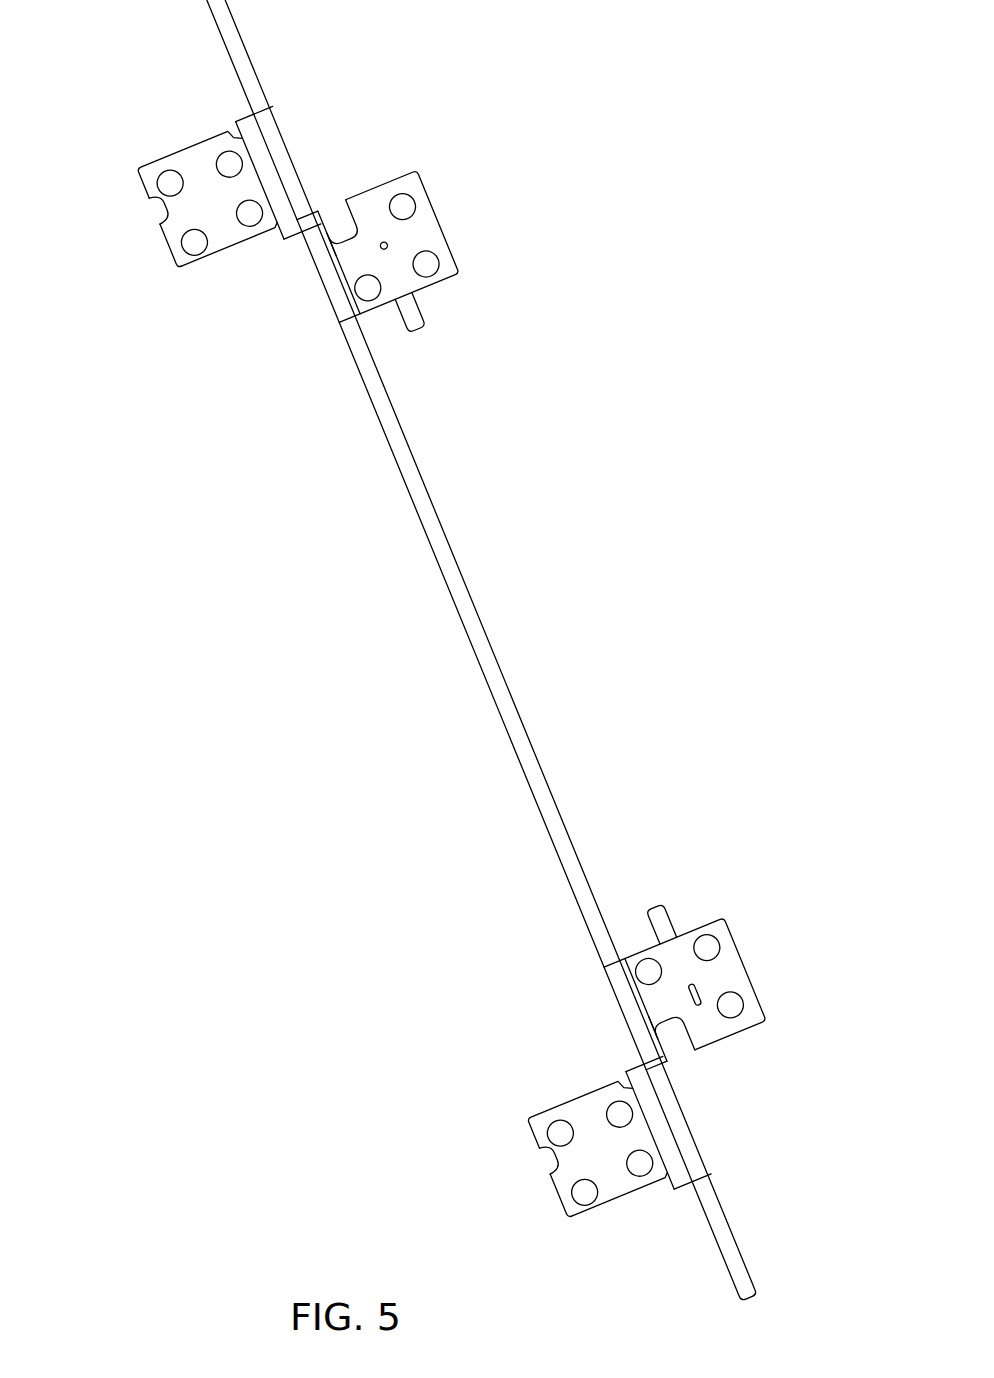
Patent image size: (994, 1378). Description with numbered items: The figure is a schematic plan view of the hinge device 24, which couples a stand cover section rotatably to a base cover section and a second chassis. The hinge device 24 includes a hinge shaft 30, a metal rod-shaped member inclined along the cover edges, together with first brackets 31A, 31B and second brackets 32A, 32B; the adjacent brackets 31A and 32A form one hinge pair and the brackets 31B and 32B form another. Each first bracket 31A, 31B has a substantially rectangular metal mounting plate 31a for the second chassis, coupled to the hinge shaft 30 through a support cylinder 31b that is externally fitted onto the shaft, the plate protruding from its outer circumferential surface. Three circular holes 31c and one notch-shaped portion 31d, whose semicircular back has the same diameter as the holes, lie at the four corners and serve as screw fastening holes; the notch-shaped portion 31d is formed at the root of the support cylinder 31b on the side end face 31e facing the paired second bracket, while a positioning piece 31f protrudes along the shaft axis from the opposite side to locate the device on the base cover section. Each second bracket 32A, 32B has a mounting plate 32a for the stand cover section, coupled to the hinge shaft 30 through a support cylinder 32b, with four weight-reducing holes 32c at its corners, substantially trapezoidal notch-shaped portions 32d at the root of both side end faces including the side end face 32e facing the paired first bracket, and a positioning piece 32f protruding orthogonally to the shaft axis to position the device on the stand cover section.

The hinge device 24 is at (41, 24).
The hinge shaft 30 is at (447, 532).
The first bracket 31A is at (437, 215).
The first bracket 31B is at (748, 976).
The mounting plate 31a is at (563, 619).
The support cylinder 31b is at (345, 312).
The hole 31c is at (403, 208).
The notch-shaped portion 31d is at (316, 250).
The side end face 31e is at (355, 204).
The positioning piece 31f is at (420, 325).
The second bracket 32A is at (140, 192).
The second bracket 32B is at (560, 1201).
The mounting plate 32a is at (353, 685).
The support cylinder 32b is at (272, 132).
The hole 32c is at (230, 165).
The notch-shaped portion 32d is at (253, 135).
The side end face 32e is at (232, 258).
The positioning piece 32f is at (150, 222).